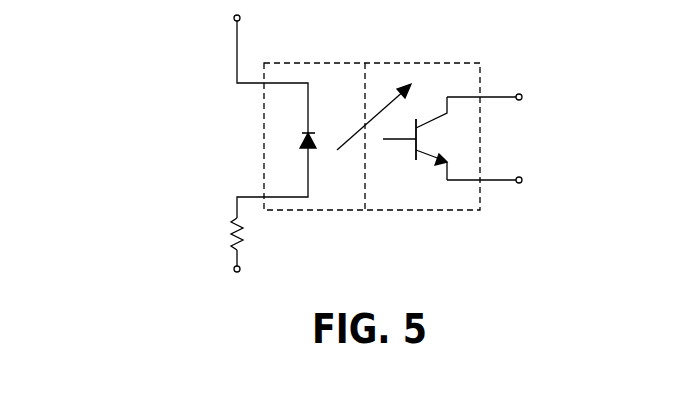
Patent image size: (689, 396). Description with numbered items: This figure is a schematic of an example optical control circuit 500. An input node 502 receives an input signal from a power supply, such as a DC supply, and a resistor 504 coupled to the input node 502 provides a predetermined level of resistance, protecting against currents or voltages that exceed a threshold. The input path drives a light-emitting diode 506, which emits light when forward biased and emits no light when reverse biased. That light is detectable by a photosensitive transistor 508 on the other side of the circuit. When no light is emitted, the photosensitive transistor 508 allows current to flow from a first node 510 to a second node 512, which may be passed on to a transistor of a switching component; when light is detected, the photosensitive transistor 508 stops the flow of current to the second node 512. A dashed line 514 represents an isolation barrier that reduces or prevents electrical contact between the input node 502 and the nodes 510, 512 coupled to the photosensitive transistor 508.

The optical control circuit 500 is at (111, 38).
The input node 502 is at (234, 264).
The resistor 504 is at (233, 217).
The light-emitting diode 506 is at (301, 136).
The photosensitive transistor 508 is at (417, 133).
The first node 510 is at (522, 179).
The second node 512 is at (522, 96).
The dashed line 514 is at (365, 80).